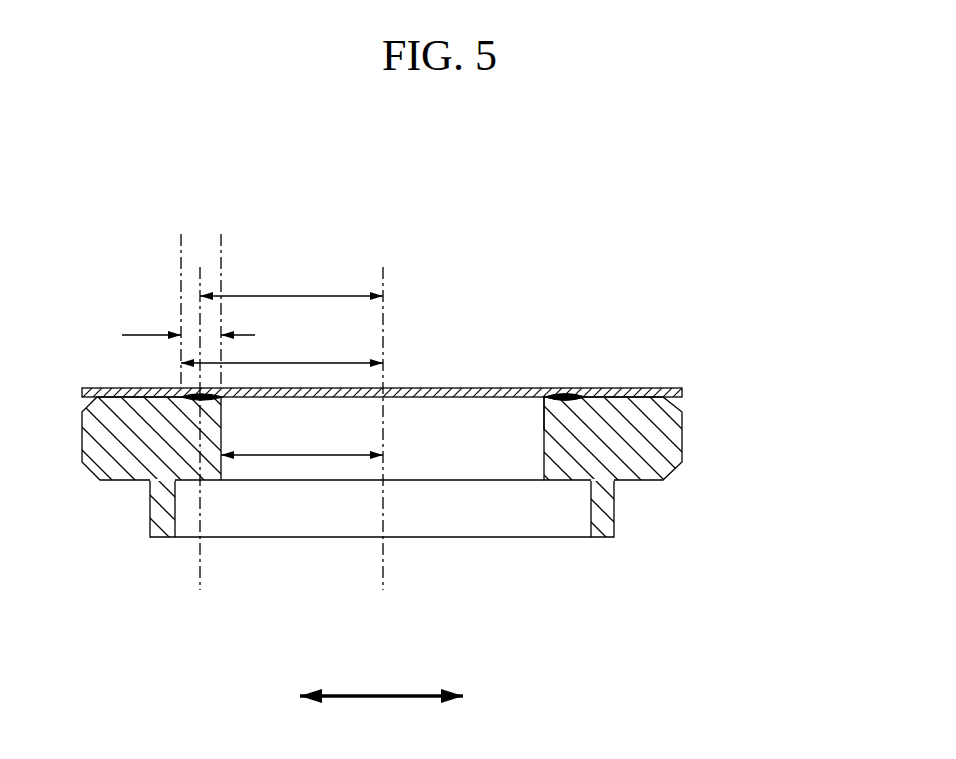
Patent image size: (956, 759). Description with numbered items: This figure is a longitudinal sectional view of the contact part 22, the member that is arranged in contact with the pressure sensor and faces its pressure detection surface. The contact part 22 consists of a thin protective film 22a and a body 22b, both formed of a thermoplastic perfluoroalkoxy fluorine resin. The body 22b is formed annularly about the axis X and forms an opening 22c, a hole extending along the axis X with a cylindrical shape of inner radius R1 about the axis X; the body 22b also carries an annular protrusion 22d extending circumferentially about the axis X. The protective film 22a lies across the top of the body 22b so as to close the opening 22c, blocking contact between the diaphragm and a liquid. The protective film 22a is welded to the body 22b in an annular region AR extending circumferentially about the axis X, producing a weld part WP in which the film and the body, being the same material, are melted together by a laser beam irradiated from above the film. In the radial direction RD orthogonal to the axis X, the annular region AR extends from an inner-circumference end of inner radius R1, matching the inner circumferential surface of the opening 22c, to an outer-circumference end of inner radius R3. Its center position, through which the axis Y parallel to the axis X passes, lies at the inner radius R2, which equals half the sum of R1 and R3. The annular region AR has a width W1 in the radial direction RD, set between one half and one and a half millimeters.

The contact part 22 is at (728, 283).
The protective film 22a is at (652, 388).
The body 22b is at (683, 438).
The opening 22c is at (544, 399).
The annular protrusion 22d is at (614, 512).
The weld part WP is at (560, 395).
The annular region AR is at (221, 232).
The width W1 is at (188, 317).
The inner radius R1 is at (302, 436).
The inner radius R2 is at (291, 280).
The inner radius R3 is at (282, 345).
The axis X is at (383, 570).
The axis Y is at (200, 570).
The radial direction RD is at (381, 677).